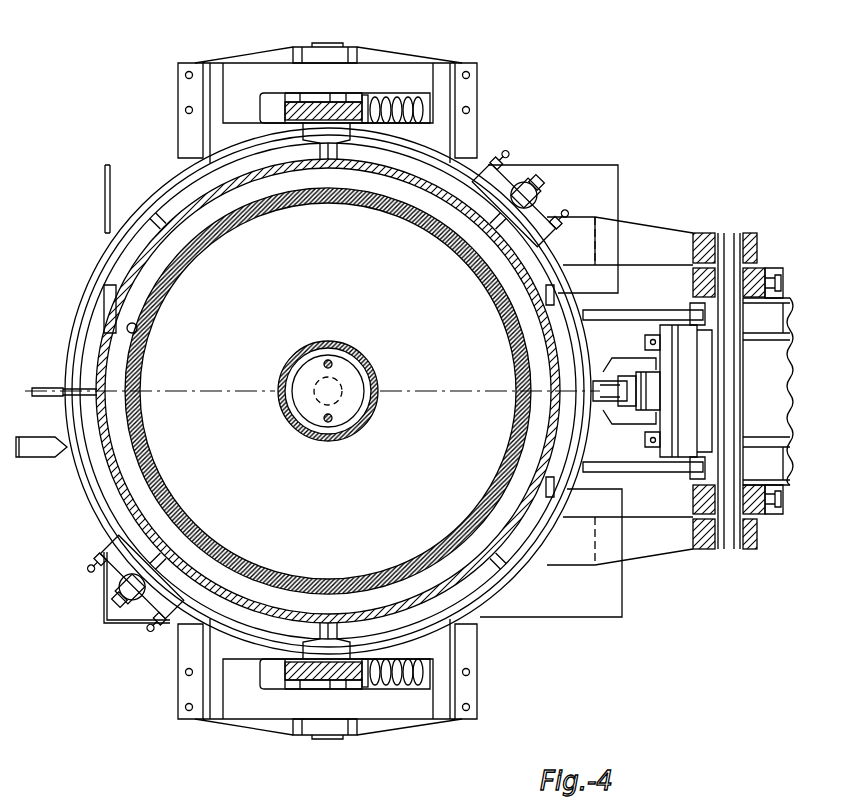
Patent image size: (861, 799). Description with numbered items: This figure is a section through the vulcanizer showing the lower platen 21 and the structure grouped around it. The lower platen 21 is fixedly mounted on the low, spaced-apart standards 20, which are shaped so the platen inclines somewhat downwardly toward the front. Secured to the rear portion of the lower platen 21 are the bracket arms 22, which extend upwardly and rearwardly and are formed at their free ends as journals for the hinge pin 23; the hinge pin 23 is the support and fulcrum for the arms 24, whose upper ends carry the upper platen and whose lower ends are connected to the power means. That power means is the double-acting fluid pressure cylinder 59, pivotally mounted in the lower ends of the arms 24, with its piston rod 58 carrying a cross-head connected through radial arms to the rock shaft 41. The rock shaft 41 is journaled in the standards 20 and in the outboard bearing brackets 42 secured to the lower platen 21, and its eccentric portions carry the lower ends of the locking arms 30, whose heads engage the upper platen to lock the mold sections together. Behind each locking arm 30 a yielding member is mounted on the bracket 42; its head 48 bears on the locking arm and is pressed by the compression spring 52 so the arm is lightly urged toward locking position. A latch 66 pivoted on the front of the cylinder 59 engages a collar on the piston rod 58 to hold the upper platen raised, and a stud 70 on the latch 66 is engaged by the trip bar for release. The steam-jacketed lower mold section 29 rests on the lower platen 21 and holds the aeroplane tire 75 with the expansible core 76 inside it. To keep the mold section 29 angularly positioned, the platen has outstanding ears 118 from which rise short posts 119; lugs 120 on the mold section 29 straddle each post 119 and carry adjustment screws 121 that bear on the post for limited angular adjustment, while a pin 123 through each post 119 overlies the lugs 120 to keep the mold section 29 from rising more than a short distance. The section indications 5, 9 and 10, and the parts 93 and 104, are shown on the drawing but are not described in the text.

The section line 5- 5 is at (106, 543).
The section line 9- 9 is at (32, 392).
The section line 10- 10 is at (245, 676).
The standards 20 is at (596, 175).
The lower platen 21 is at (92, 492).
The bracket arms 22 is at (655, 236).
The hinge pin 23 is at (729, 545).
The arms 24 is at (776, 268).
The lower mold section 29 is at (107, 307).
The locking arms 30 is at (302, 100).
The rock shaft 41 is at (335, 43).
The outboard bearing brackets 42 is at (240, 78).
The head 48 is at (368, 100).
The compression spring 52 is at (408, 97).
The piston rod 58 is at (612, 410).
The cylinder 59 is at (768, 391).
The latch 66 is at (678, 458).
The stud 70 is at (640, 458).
The aeroplane tire 75 is at (137, 332).
The expansible core 76 is at (130, 380).
The bar 93 is at (640, 311).
The shaft lever 104 is at (50, 398).
The ears 118 is at (528, 185).
The post 119 is at (536, 190).
The lugs 120 is at (512, 175).
The adjustment screws 121 is at (490, 160).
The pin 123 is at (548, 192).